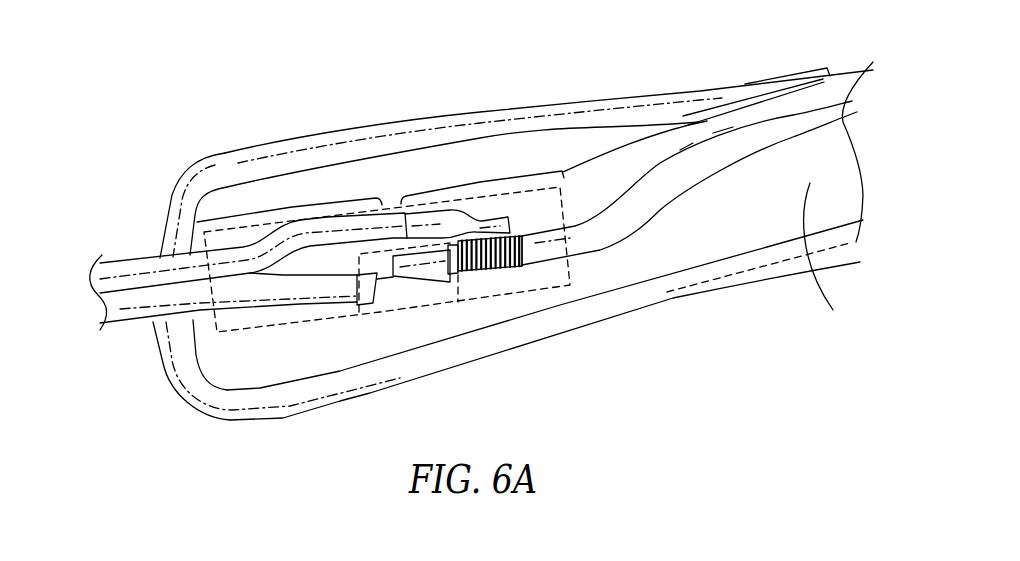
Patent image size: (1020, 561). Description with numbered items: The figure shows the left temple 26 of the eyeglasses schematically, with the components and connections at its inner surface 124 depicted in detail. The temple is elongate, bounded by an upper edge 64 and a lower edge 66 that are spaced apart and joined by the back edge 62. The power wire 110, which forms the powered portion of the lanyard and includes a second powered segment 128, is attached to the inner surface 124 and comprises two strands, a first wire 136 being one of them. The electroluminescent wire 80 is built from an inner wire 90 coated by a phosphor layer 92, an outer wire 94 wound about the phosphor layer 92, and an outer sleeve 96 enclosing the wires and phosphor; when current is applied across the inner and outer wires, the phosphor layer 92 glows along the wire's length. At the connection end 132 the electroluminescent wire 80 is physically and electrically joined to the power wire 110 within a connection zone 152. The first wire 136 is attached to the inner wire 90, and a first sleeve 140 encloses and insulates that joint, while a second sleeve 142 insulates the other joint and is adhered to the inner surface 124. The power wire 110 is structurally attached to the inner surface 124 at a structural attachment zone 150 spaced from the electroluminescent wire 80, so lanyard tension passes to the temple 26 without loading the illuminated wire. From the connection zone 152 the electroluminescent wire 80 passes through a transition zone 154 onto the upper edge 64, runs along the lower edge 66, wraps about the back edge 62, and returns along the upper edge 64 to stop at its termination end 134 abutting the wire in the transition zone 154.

The left temple 26 is at (497, 62).
The back edge 62 is at (193, 357).
The upper edge 64 is at (347, 165).
The lower edge 66 is at (723, 257).
The electroluminescent wire 80 is at (673, 298).
The inner wire 90 is at (456, 284).
The phosphor layer 92 is at (417, 262).
The outer wire 94 is at (500, 270).
The outer sleeve 96 is at (540, 255).
The power wire 110 is at (137, 254).
The inner surface 124 is at (836, 255).
The second powered segment 128 is at (136, 303).
The connection end 132 is at (479, 276).
The termination end 134 is at (740, 78).
The first wire 136 is at (387, 303).
The first sleeve 140 is at (405, 300).
The second sleeve 142 is at (257, 330).
The structural attachment zone 150 is at (291, 205).
The connection zone 152 is at (453, 182).
The transition zone 154 is at (687, 113).